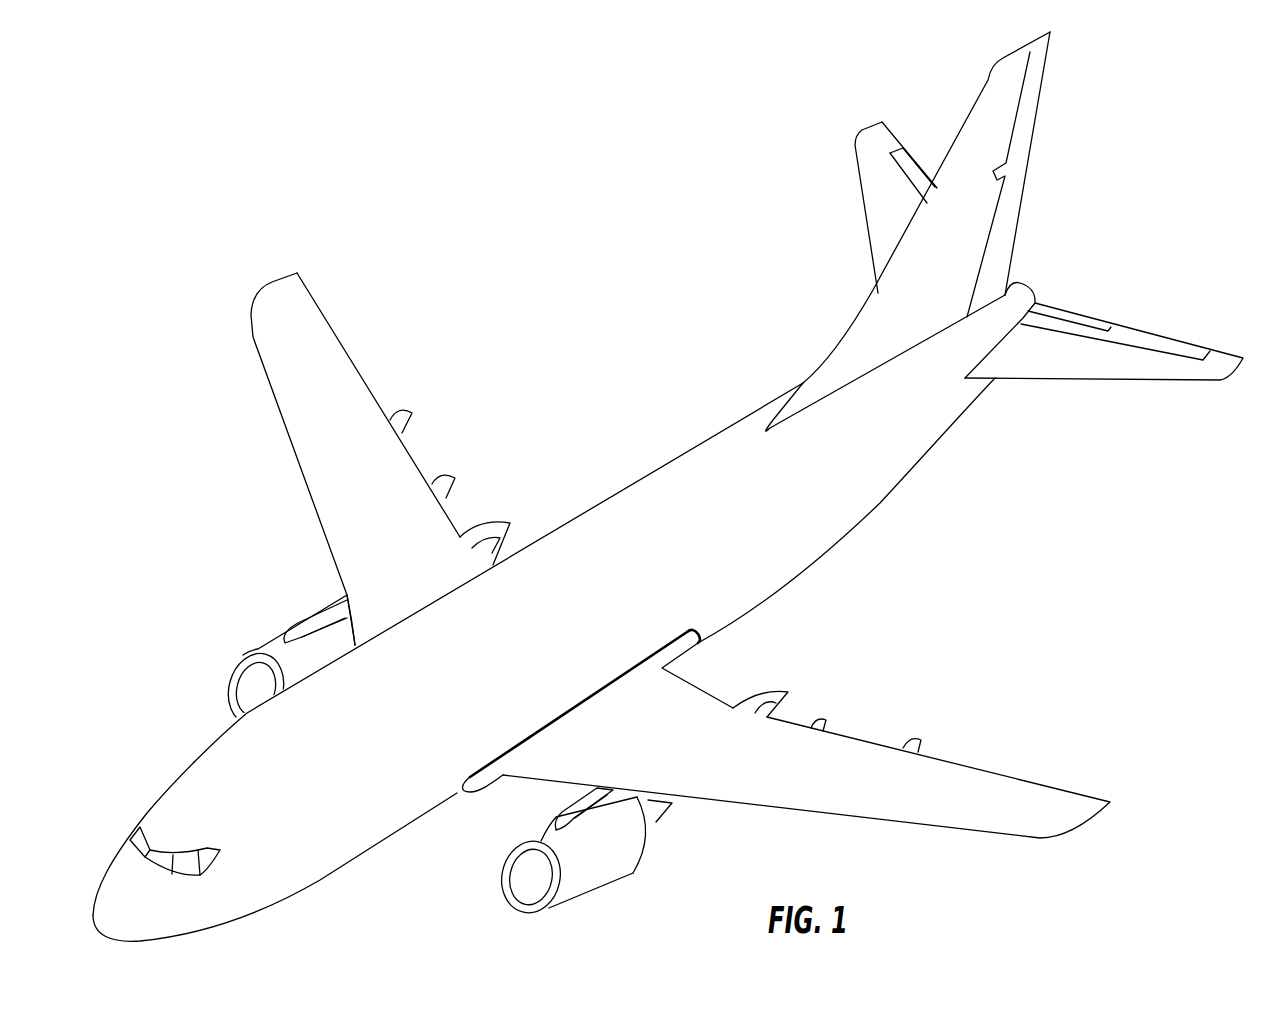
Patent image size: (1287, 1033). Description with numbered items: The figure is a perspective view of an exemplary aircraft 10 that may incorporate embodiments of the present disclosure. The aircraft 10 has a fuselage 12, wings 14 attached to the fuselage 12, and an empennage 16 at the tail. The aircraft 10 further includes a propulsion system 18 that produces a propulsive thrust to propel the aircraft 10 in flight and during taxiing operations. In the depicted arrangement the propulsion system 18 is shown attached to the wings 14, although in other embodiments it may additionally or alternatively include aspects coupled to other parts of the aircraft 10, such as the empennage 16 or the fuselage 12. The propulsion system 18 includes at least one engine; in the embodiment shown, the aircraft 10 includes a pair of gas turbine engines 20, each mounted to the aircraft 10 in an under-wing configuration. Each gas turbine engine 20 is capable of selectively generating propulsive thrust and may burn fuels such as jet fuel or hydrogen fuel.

The aircraft 10 is at (602, 280).
The fuselage 12 is at (743, 578).
The wings 14 is at (273, 345).
The empennage 16 is at (1052, 208).
The propulsion system 18 is at (244, 577).
The gas turbine engines 20 is at (270, 648).